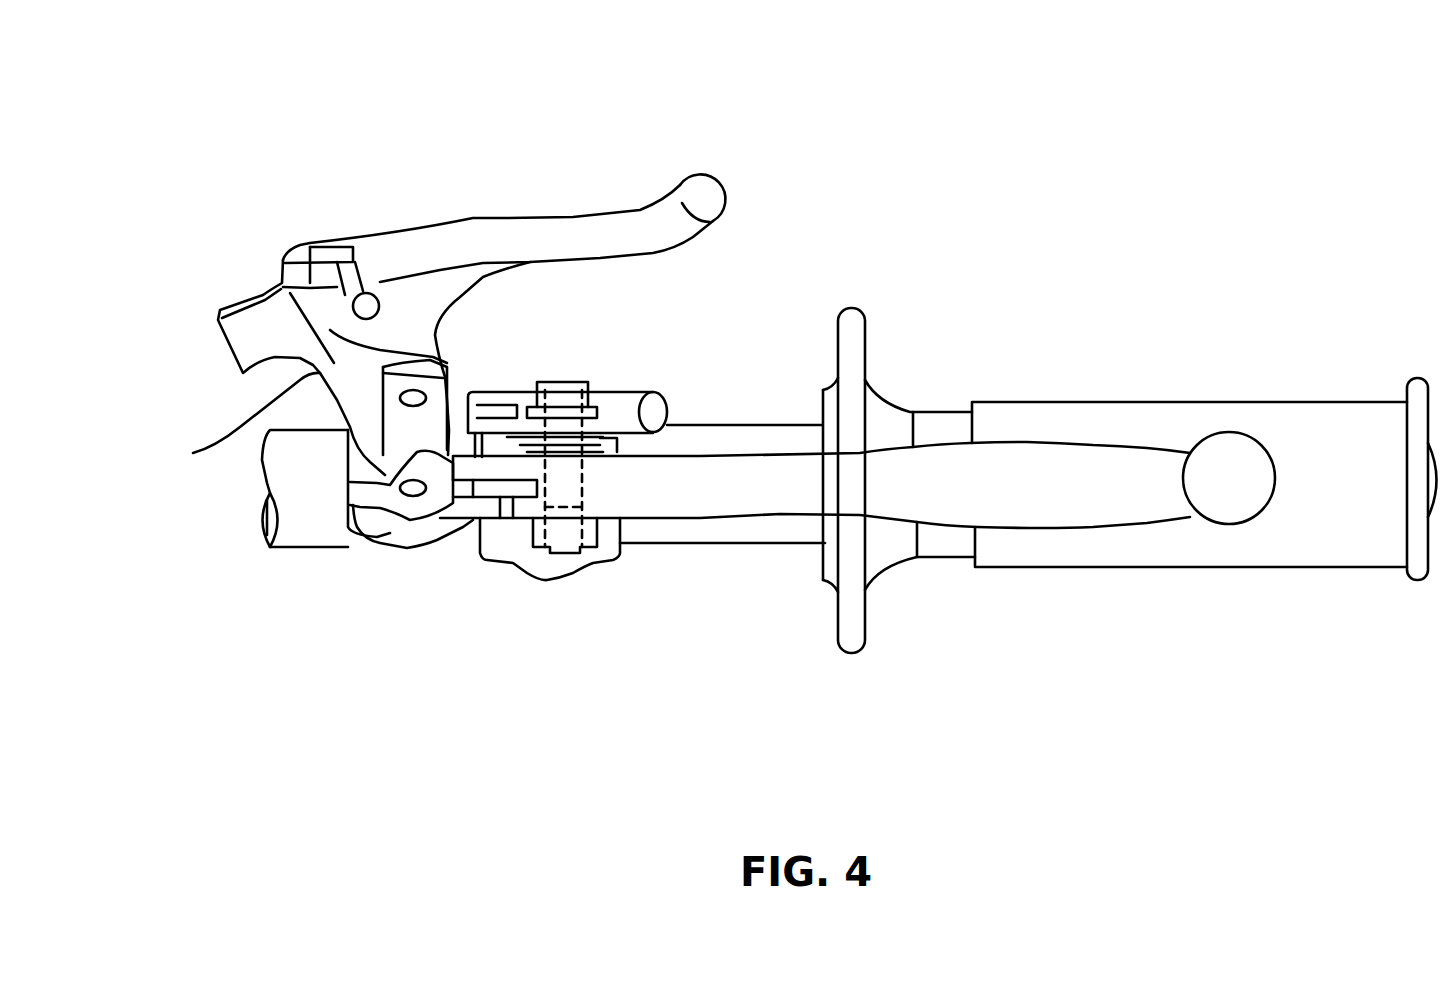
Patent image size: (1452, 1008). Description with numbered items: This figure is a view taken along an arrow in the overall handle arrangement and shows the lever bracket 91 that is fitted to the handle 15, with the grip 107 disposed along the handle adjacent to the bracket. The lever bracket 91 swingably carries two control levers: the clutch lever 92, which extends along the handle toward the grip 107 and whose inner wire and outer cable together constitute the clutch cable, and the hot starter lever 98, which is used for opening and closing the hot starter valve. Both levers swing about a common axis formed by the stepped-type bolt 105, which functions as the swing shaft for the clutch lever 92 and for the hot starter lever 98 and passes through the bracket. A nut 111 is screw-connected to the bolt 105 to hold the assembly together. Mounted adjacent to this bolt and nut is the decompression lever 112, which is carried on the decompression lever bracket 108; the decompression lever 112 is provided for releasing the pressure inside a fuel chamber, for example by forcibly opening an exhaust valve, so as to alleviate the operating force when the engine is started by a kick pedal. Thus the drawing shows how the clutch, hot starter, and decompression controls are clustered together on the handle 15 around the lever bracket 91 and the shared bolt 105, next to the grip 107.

The decompression lever 112 is at (570, 217).
The decompression lever bracket 108 is at (212, 449).
The bolt 105 is at (562, 380).
The hot starter lever 98 is at (640, 385).
The clutch lever 92 is at (1105, 443).
The grip 107 is at (1253, 568).
The handle 15 is at (727, 543).
The nut 111 is at (505, 562).
The lever bracket 91 is at (573, 573).